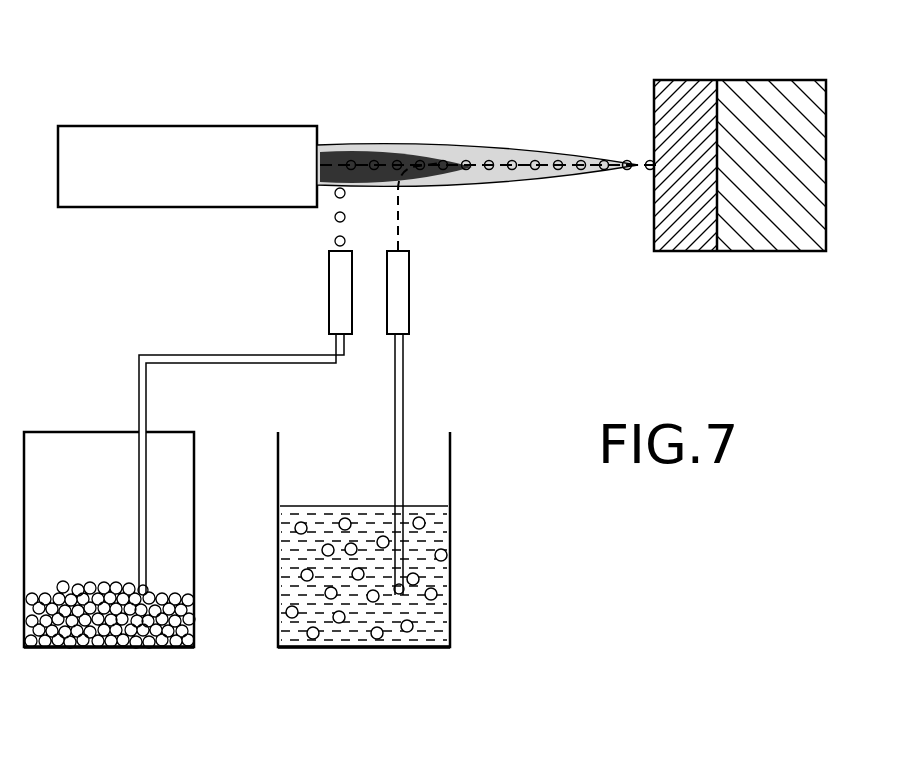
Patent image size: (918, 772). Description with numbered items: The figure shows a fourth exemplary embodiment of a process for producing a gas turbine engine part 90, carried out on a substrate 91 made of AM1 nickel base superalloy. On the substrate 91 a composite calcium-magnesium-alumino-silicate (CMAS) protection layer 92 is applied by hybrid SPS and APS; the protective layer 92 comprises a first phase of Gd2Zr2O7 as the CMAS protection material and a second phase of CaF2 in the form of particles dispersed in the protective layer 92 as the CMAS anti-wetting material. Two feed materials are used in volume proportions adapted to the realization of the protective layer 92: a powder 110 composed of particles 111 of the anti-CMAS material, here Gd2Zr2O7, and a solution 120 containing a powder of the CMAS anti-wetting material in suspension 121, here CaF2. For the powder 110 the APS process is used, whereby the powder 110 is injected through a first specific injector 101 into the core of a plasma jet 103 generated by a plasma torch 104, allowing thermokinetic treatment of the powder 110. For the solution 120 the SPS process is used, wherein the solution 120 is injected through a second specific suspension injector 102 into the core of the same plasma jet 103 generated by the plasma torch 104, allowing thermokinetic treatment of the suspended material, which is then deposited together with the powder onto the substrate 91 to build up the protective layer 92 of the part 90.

The gas turbine engine part 90 is at (740, 148).
The substrate 91 is at (760, 240).
The CMAS protection layer 92 is at (684, 240).
The first specific injector 101 is at (333, 290).
The second specific suspension injector 102 is at (403, 290).
The plasma jet 103 is at (481, 185).
The plasma torch 104 is at (172, 181).
The powder 110 is at (109, 558).
The particles 111 is at (60, 650).
The solution 120 is at (364, 538).
The powder of CMAS anti-wetting material in suspension 121 is at (313, 640).